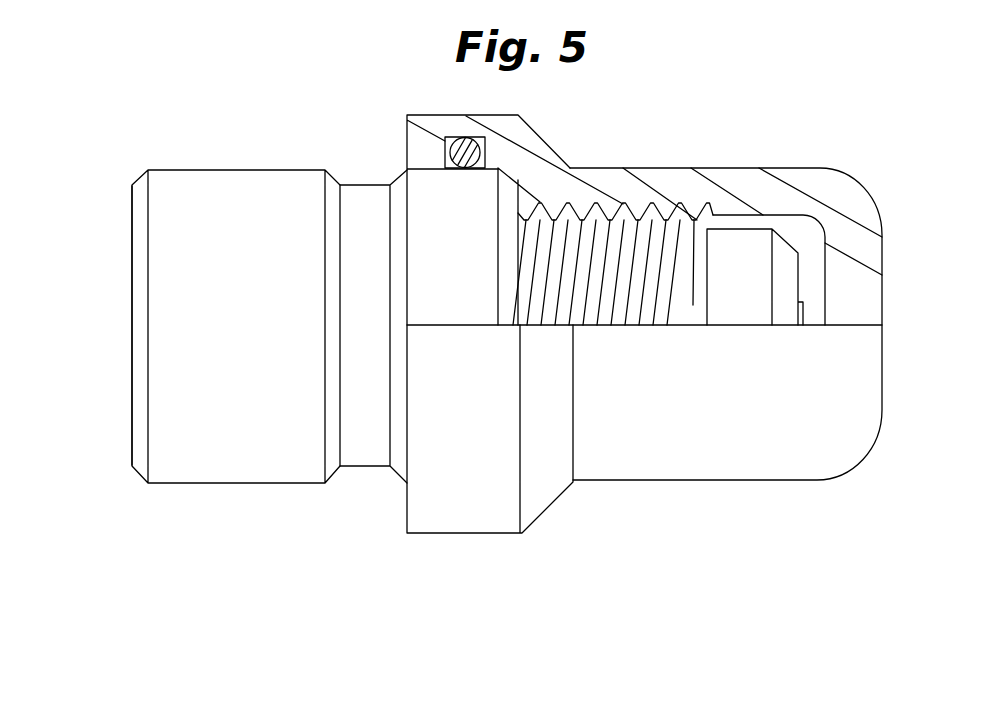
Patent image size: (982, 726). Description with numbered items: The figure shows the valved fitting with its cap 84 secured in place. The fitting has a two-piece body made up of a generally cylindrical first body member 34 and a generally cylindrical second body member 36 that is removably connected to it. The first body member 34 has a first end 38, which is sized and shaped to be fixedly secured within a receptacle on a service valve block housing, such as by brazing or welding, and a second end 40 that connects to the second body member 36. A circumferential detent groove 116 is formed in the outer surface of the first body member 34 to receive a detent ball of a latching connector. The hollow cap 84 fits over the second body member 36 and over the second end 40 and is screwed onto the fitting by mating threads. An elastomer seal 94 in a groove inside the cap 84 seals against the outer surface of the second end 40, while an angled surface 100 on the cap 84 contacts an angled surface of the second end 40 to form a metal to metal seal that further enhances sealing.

The first body member 34 is at (270, 160).
The first end 38 is at (167, 283).
The circumferential detent groove 116 is at (368, 466).
The second end 40 is at (422, 190).
The elastomer seal 94 is at (452, 137).
The angled surface 100 is at (511, 180).
The second body member 36 is at (632, 204).
The cap 84 is at (788, 162).